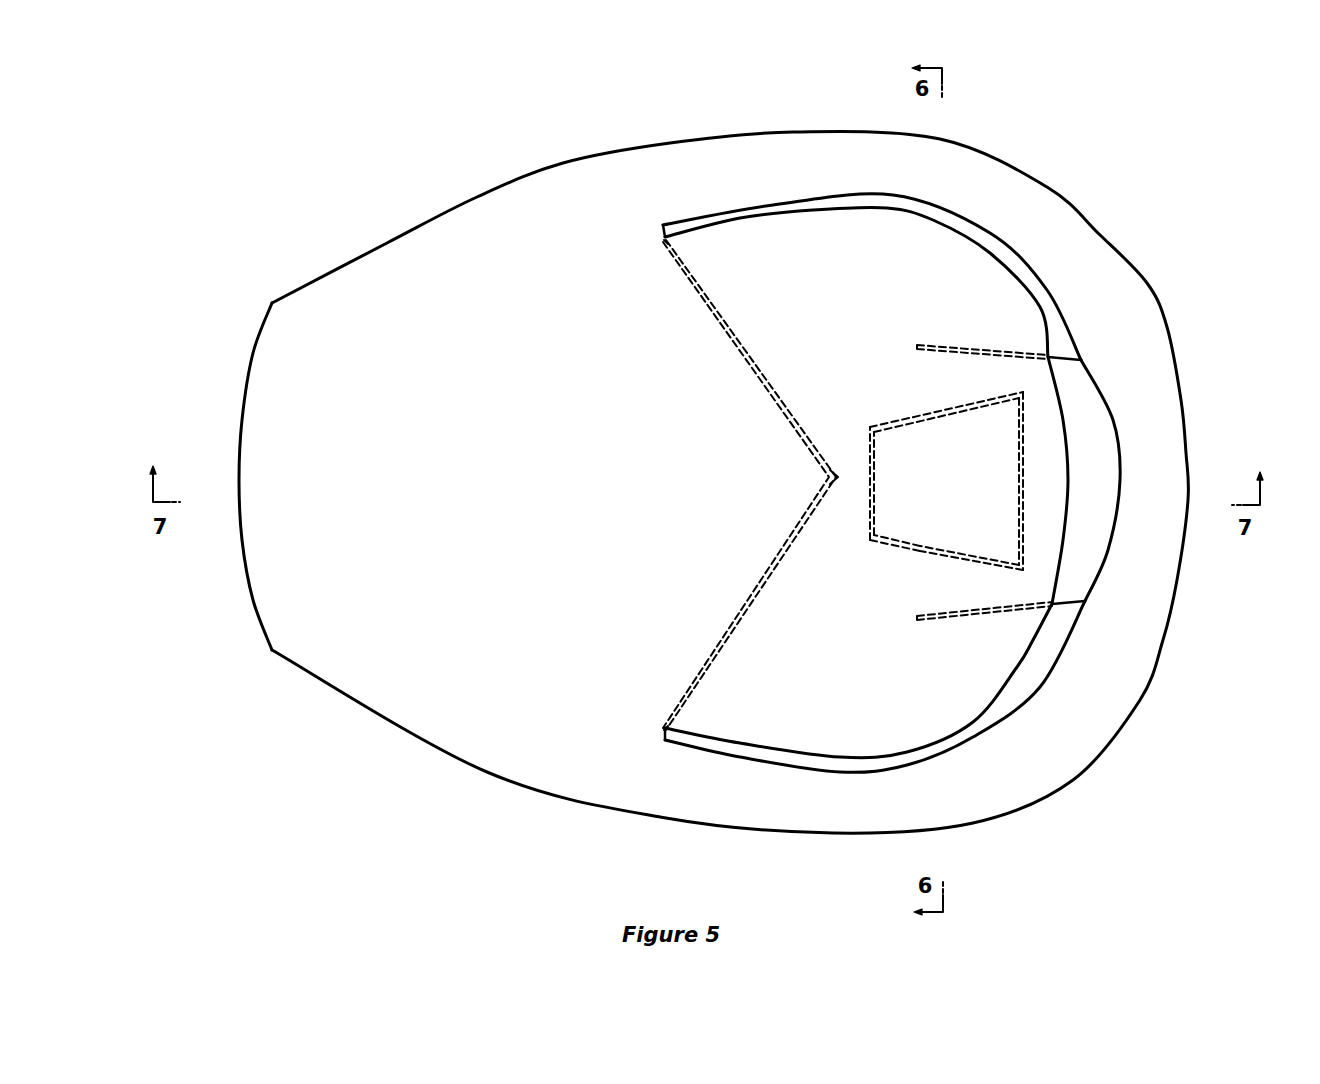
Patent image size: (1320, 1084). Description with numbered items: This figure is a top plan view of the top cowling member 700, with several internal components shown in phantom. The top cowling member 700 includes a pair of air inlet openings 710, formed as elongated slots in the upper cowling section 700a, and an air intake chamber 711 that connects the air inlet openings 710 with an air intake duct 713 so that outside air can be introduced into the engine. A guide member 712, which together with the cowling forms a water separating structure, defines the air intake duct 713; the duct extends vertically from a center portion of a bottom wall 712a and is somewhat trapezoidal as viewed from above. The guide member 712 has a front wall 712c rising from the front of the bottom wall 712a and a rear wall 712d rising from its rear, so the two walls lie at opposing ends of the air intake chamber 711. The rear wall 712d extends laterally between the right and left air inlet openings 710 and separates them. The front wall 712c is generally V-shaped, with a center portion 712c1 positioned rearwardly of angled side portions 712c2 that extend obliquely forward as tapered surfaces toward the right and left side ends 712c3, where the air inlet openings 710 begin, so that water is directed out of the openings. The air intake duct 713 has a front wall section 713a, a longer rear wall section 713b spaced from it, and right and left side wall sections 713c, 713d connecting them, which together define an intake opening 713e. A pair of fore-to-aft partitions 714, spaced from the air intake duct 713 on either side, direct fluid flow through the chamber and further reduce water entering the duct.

The top cowling member 700 is at (390, 748).
The upper cowling section 700a is at (1042, 413).
The air inlet openings 710 is at (920, 461).
The air intake chamber 711 is at (920, 383).
The guide member 712 is at (867, 461).
The bottom wall 712a is at (873, 237).
The front wall 712c is at (704, 481).
The center portion 712c1 is at (840, 473).
The side portions 712c2 is at (728, 330).
The right and left side ends 712c3 is at (665, 238).
The rear wall 712d is at (1105, 457).
The air intake duct 713 is at (992, 480).
The front wall section 713a is at (868, 437).
The rear wall section 713b is at (1023, 507).
The right side wall section 713c is at (967, 553).
The left side wall section 713d is at (957, 407).
The intake opening 713e is at (920, 525).
The partitions 714 is at (932, 345).